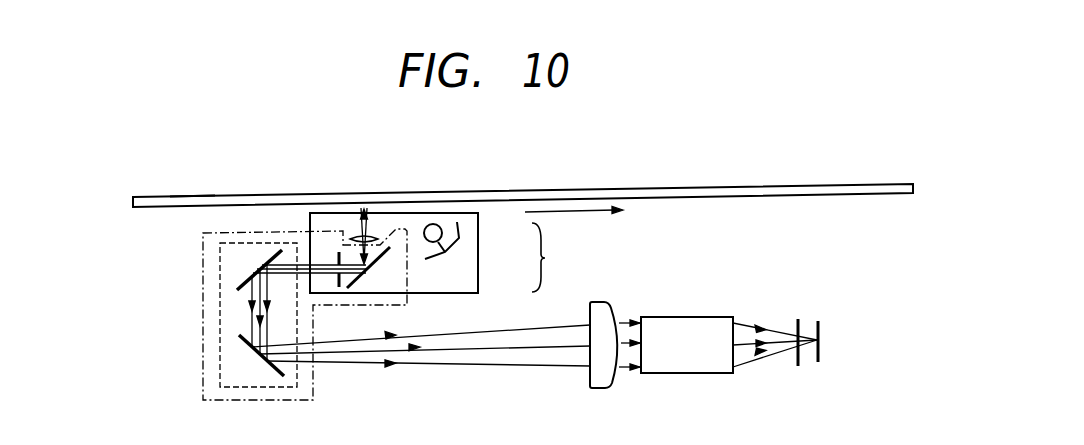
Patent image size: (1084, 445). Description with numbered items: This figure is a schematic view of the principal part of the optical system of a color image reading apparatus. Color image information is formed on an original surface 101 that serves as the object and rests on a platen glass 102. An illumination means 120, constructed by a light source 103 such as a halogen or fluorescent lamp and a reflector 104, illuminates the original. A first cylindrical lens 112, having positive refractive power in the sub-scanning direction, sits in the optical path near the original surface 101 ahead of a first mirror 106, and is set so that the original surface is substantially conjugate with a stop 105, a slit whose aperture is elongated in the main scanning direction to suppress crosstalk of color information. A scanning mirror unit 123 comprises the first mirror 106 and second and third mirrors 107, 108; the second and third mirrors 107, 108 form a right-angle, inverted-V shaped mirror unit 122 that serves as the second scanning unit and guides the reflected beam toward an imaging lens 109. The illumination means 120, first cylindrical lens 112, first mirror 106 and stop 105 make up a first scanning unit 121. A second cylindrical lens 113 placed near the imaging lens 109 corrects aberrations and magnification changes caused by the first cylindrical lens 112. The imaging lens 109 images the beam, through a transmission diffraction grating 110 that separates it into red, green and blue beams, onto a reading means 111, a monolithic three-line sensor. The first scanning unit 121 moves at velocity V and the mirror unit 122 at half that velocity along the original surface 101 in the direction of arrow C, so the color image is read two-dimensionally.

The original surface 101 is at (263, 196).
The platen glass 102 is at (192, 199).
The light source 103 is at (450, 253).
The reflector 104 is at (465, 238).
The stop 105 is at (335, 289).
The first mirror 106 is at (373, 262).
The second mirror 107 is at (258, 262).
The third mirror 108 is at (263, 357).
The imaging lens 109 is at (695, 321).
The transmission diffraction grating 110 is at (794, 320).
The reading means 111 is at (822, 327).
The first cylindrical lens 112 is at (350, 237).
The second cylindrical lens 113 is at (610, 301).
The illumination means 120 is at (502, 258).
The first scanning unit 121 is at (393, 212).
The right-angle, inverted-V shaped mirror unit 122 is at (220, 342).
The scanning mirror unit 123 is at (203, 290).
The arrow C is at (617, 218).